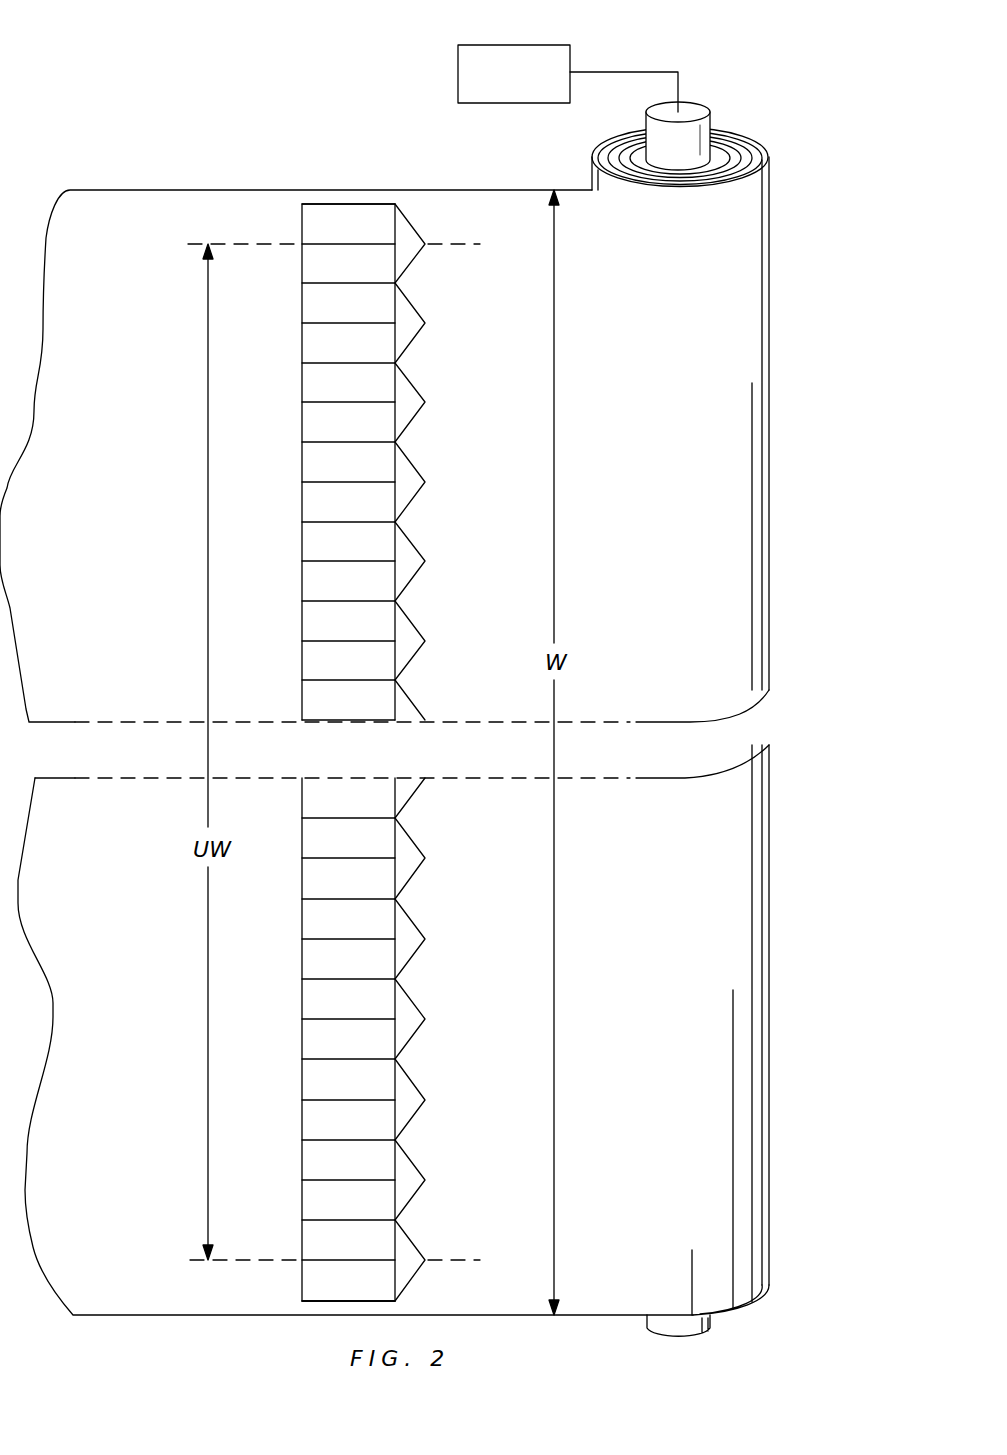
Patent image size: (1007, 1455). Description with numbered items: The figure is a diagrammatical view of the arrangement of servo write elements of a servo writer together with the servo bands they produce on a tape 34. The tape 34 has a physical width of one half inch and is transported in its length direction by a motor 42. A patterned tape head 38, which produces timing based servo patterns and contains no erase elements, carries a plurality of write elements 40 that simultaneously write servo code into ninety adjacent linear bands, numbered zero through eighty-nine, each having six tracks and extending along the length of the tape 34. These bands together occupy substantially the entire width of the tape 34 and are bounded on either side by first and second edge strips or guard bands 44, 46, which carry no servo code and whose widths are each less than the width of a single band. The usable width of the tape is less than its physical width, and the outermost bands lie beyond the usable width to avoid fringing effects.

The tape 34 is at (716, 309).
The tape head 38 is at (368, 192).
The write elements 40 is at (320, 210).
The motor 42 is at (515, 45).
The first guard band 44 is at (331, 198).
The second guard band 46 is at (335, 1306).